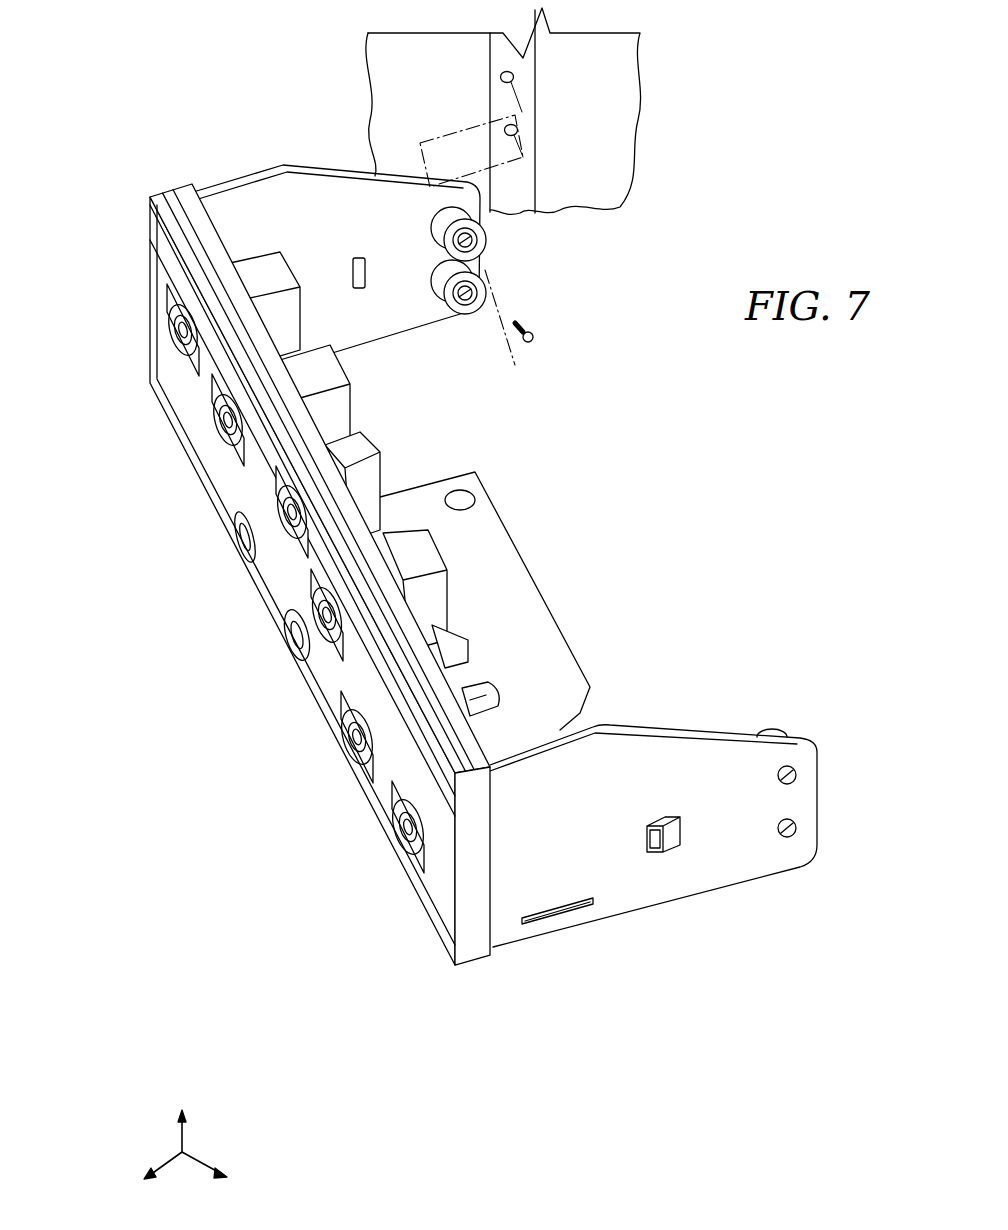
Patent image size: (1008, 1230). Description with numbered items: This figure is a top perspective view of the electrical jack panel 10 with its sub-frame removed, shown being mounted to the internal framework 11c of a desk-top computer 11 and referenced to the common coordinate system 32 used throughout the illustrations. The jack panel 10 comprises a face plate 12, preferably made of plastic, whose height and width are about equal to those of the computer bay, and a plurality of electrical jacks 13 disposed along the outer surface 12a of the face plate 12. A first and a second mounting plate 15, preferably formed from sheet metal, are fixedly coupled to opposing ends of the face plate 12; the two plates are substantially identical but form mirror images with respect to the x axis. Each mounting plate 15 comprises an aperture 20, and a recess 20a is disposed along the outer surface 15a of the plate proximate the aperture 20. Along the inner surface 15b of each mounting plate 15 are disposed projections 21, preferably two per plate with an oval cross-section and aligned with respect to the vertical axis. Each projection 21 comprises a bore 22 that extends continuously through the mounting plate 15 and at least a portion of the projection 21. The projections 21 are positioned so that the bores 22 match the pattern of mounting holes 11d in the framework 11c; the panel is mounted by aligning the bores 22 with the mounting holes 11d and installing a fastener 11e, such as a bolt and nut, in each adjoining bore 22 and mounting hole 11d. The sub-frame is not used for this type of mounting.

The jack panel 10 is at (147, 556).
The desk-top computer 11 is at (623, 122).
The internal framework 11c is at (497, 53).
The mounting holes 11d is at (523, 132).
The fastener 11e is at (533, 338).
The face plate 12 is at (496, 795).
The outer surface 12a is at (440, 898).
The electrical jacks 13 is at (342, 742).
The mounting plate 15 is at (262, 166).
The outer surface 15a is at (609, 772).
The inner surface 15b is at (272, 218).
The aperture 20 is at (357, 258).
The recess 20a is at (652, 845).
The projections 21 is at (483, 233).
The bore 22 is at (443, 228).
The coordinate system 32 is at (187, 1148).